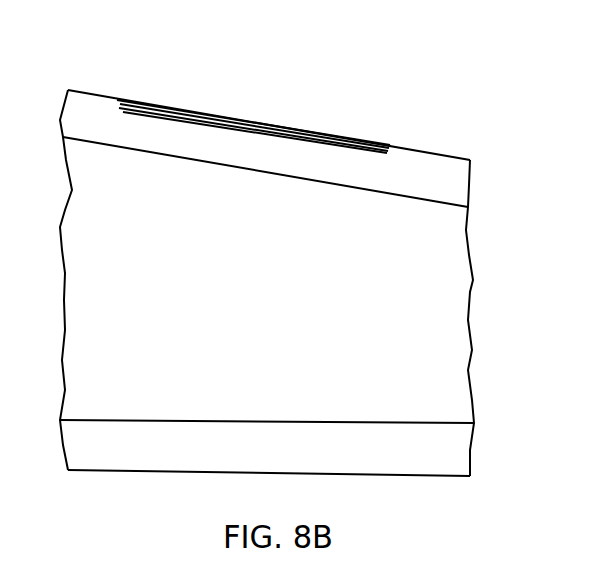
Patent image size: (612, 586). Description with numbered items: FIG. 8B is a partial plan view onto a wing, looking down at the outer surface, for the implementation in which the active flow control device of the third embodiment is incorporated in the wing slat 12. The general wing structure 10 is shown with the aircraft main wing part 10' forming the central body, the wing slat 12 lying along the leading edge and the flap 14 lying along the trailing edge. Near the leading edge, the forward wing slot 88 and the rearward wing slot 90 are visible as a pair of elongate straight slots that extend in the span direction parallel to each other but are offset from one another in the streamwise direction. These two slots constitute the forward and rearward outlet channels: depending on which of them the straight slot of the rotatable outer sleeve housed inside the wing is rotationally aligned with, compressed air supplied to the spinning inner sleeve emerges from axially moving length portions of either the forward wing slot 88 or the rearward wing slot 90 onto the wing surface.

The semiconductor device structure 10 is at (297, 250).
The aircraft main wing part 10' is at (297, 283).
The wing slat 12 is at (466, 182).
The flap 14 is at (465, 452).
The forward wing slot 88 is at (307, 127).
The rearward wing slot 90 is at (367, 138).